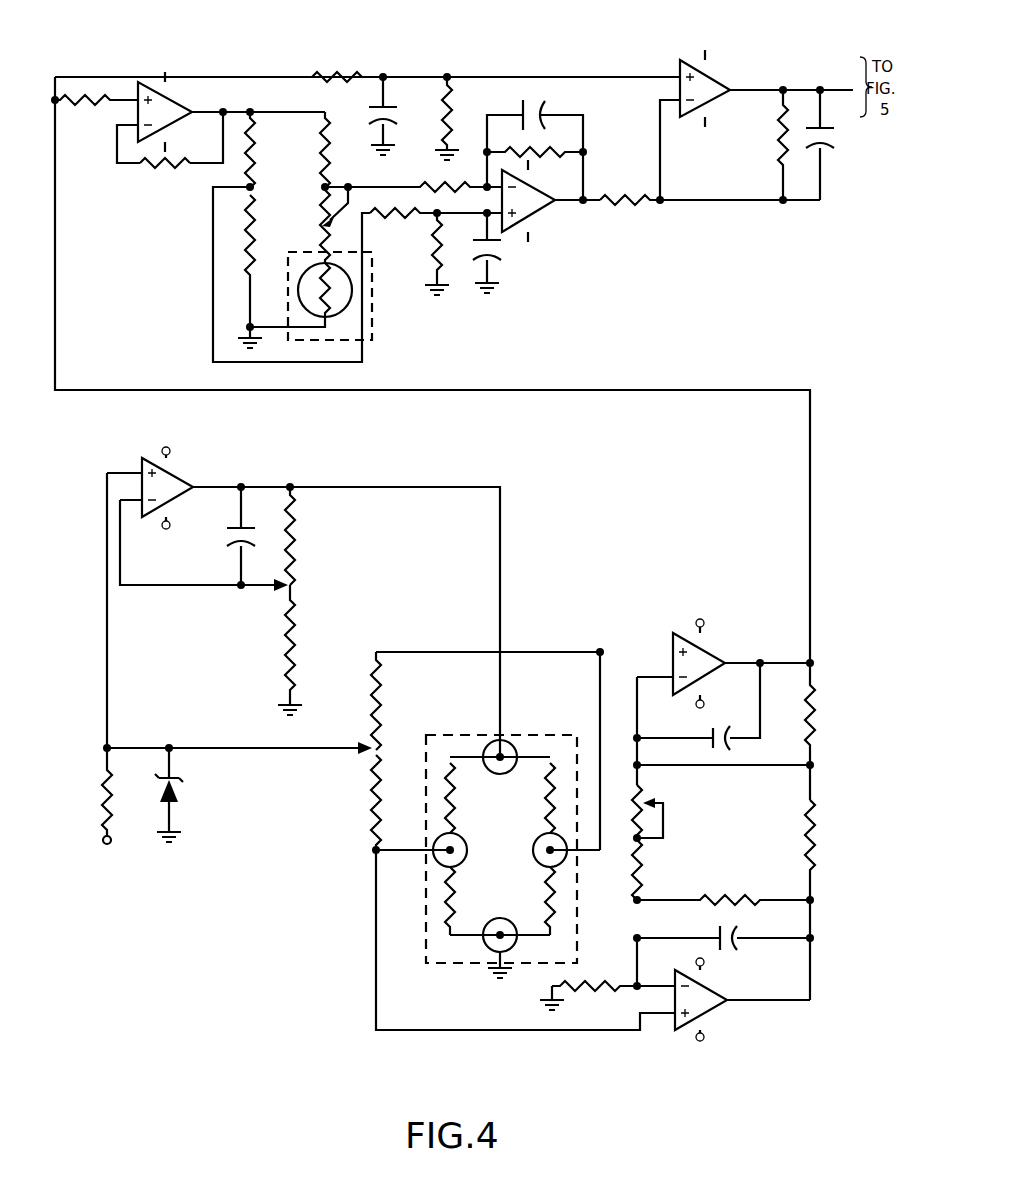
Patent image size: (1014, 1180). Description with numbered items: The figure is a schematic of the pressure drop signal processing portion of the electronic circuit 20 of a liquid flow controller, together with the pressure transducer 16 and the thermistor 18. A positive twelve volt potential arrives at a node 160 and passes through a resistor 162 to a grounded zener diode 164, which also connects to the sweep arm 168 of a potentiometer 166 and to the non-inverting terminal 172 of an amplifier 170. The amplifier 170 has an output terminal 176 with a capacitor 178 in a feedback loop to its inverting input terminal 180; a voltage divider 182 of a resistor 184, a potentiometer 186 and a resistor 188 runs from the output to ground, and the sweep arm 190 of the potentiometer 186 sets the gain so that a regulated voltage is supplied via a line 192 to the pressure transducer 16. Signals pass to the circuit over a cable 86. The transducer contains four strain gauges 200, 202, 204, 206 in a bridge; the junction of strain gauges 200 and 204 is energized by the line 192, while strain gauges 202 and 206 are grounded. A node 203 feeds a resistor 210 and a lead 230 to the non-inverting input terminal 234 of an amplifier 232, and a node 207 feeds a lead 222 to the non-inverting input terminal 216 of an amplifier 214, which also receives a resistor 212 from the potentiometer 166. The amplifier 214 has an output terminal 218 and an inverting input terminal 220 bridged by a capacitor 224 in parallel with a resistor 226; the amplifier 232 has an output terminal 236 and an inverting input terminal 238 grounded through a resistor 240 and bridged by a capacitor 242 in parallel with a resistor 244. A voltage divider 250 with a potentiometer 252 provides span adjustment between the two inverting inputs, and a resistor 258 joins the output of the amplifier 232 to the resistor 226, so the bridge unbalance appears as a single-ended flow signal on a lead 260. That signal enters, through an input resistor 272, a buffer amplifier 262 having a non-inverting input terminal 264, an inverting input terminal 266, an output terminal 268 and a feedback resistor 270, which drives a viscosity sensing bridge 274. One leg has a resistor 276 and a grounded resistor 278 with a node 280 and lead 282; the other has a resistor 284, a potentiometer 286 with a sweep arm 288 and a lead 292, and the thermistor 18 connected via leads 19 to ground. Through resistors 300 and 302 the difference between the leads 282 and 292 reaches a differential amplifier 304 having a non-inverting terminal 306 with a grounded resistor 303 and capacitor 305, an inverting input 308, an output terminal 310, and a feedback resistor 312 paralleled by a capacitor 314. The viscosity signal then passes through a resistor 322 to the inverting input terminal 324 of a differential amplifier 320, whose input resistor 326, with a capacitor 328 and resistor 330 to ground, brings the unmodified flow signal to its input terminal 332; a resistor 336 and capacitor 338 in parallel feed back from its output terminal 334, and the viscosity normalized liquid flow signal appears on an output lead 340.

The electronic circuit 20 is at (576, 22).
The pressure transducer 16 is at (467, 732).
The thermistor 18 is at (375, 318).
The leads 19 is at (351, 267).
The cable 86 is at (499, 700).
The node 160 is at (98, 840).
The resistor 162 is at (98, 785).
The zener diode 164 is at (180, 789).
The potentiometer 166 is at (377, 742).
The sweep arm 168 is at (368, 746).
The amplifier 170 is at (180, 473).
The non-inverting terminal 172 is at (105, 468).
The output terminal 176 is at (238, 486).
The capacitor 178 is at (235, 528).
The inverting input terminal 180 is at (120, 500).
The voltage divider 182 is at (301, 570).
The resistor 184 is at (301, 530).
The potentiometer 186 is at (301, 600).
The resistor 188 is at (296, 656).
The sweep arm 190 is at (276, 586).
The line 192 is at (400, 486).
The strain gauge 200 is at (452, 808).
The strain gauge 202 is at (440, 895).
The node 203 is at (466, 850).
The strain gauge 204 is at (546, 825).
The strain gauge 206 is at (540, 903).
The node 207 is at (534, 852).
The resistor 210 is at (366, 835).
The resistor 212 is at (376, 653).
The amplifier 214 is at (660, 631).
The non-inverting input terminal 216 is at (602, 650).
The output terminal 218 is at (745, 658).
The inverting input terminal 220 is at (653, 683).
The lead 222 is at (600, 710).
The capacitor 224 is at (733, 742).
The resistor 226 is at (818, 720).
The lead 230 is at (369, 900).
The amplifier 232 is at (723, 1010).
The non-inverting input terminal 234 is at (640, 1018).
The output terminal 236 is at (751, 1001).
The inverting input terminal 238 is at (635, 975).
The resistor 240 is at (605, 1008).
The capacitor 242 is at (718, 938).
The resistor 244 is at (728, 898).
The voltage divider 250 is at (653, 794).
The potentiometer 252 is at (605, 838).
The resistor 258 is at (815, 844).
The lead 260 is at (300, 77).
The amplifier 262 is at (178, 87).
The non-inverting input terminal 264 is at (128, 89).
The inverting input terminal 266 is at (123, 130).
The output terminal 268 is at (217, 110).
The feedback resistor 270 is at (160, 168).
The input resistor 272 is at (100, 92).
The viscosity sensing bridge 274 is at (268, 112).
The resistor 276 is at (258, 138).
The resistor 278 is at (317, 214).
The node 280 is at (258, 172).
The lead 282 is at (214, 267).
The resistor 284 is at (330, 134).
The potentiometer 286 is at (330, 197).
The sweep arm 288 is at (258, 240).
The lead 292 is at (347, 184).
The resistor 300 is at (428, 188).
The resistor 302 is at (400, 218).
The resistor 303 is at (442, 265).
The differential amplifier 304 is at (542, 210).
The capacitor 305 is at (497, 260).
The non-inverting terminal 306 is at (492, 225).
The inverting input 308 is at (514, 180).
The output terminal 310 is at (572, 203).
The resistor 312 is at (558, 145).
The capacitor 314 is at (520, 103).
The differential amplifier 320 is at (710, 76).
The resistor 322 is at (623, 192).
The inverting input terminal 324 is at (662, 116).
The input resistor 326 is at (333, 75).
The capacitor 328 is at (387, 114).
The resistor 330 is at (450, 80).
The input terminal 332 is at (643, 77).
The output terminal 334 is at (750, 90).
The resistor 336 is at (777, 150).
The capacitor 338 is at (823, 148).
The output lead 340 is at (822, 88).